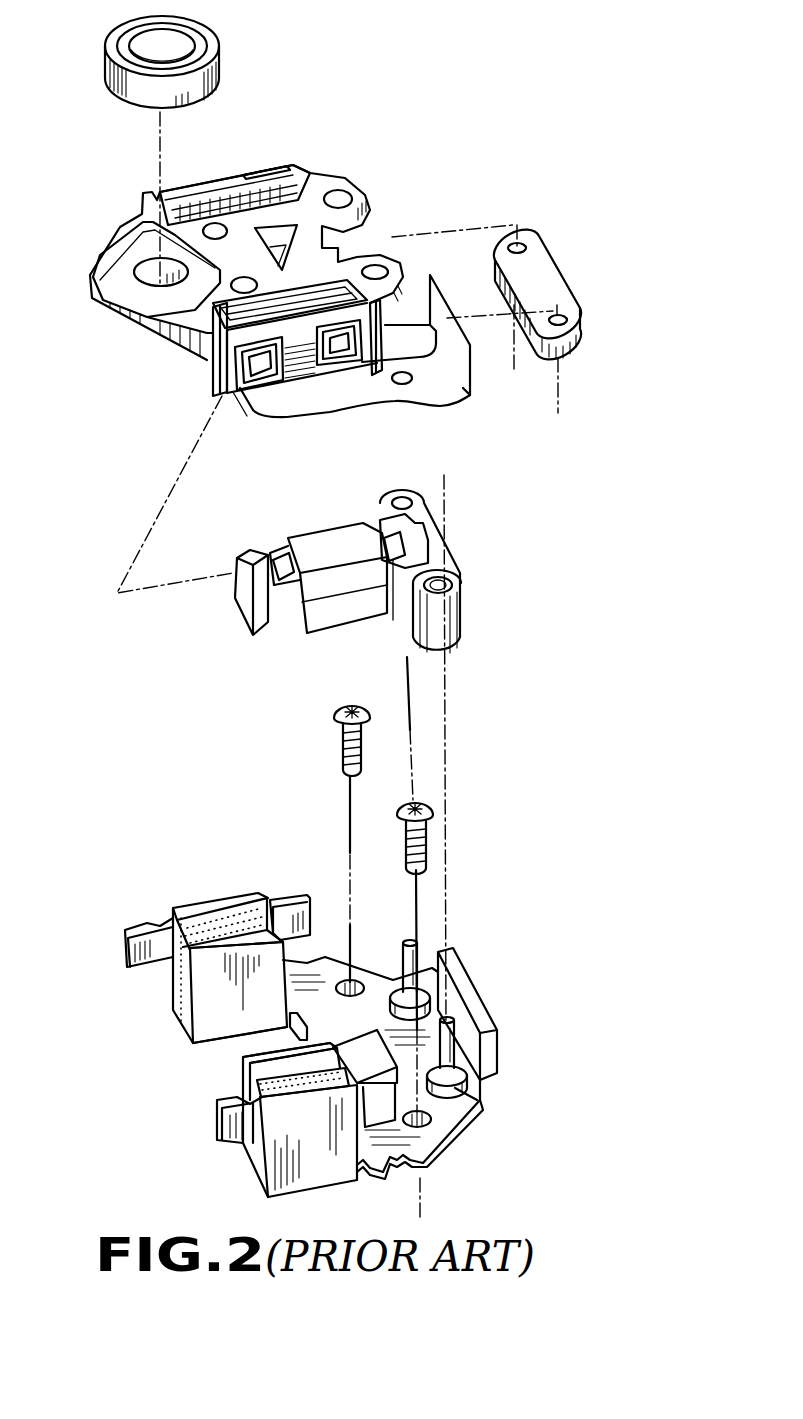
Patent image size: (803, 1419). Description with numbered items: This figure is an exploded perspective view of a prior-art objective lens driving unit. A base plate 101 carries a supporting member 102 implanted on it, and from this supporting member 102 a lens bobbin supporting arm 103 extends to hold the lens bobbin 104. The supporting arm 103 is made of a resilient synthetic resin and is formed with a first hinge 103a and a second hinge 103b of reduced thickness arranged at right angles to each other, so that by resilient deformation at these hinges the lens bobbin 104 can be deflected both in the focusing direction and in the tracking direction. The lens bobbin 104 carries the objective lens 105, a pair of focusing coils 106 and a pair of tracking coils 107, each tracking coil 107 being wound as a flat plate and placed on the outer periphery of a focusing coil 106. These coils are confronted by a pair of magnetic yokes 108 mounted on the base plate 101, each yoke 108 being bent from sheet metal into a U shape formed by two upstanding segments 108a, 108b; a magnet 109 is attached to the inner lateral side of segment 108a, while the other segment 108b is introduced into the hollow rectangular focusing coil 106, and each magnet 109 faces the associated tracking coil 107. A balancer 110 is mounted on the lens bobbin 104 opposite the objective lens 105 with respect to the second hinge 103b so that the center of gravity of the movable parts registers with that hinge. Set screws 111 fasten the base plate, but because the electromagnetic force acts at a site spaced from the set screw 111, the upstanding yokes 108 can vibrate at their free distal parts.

The base plate 101 is at (466, 1112).
The supporting member 102 is at (447, 568).
The lens bobbin supporting arm 103 is at (328, 542).
The first hinge 103a is at (380, 520).
The second hinge 103b is at (254, 566).
The lens bobbin 104 is at (128, 322).
The objective lens 105 is at (172, 48).
The focusing coil 106 is at (345, 280).
The tracking coil 107 is at (207, 183).
The magnetic yoke 108 is at (173, 987).
The upstanding segment 108a is at (190, 908).
The upstanding segment 108b is at (243, 1072).
The magnet 109 is at (247, 912).
The balancer 110 is at (540, 266).
The set screw 111 is at (340, 738).